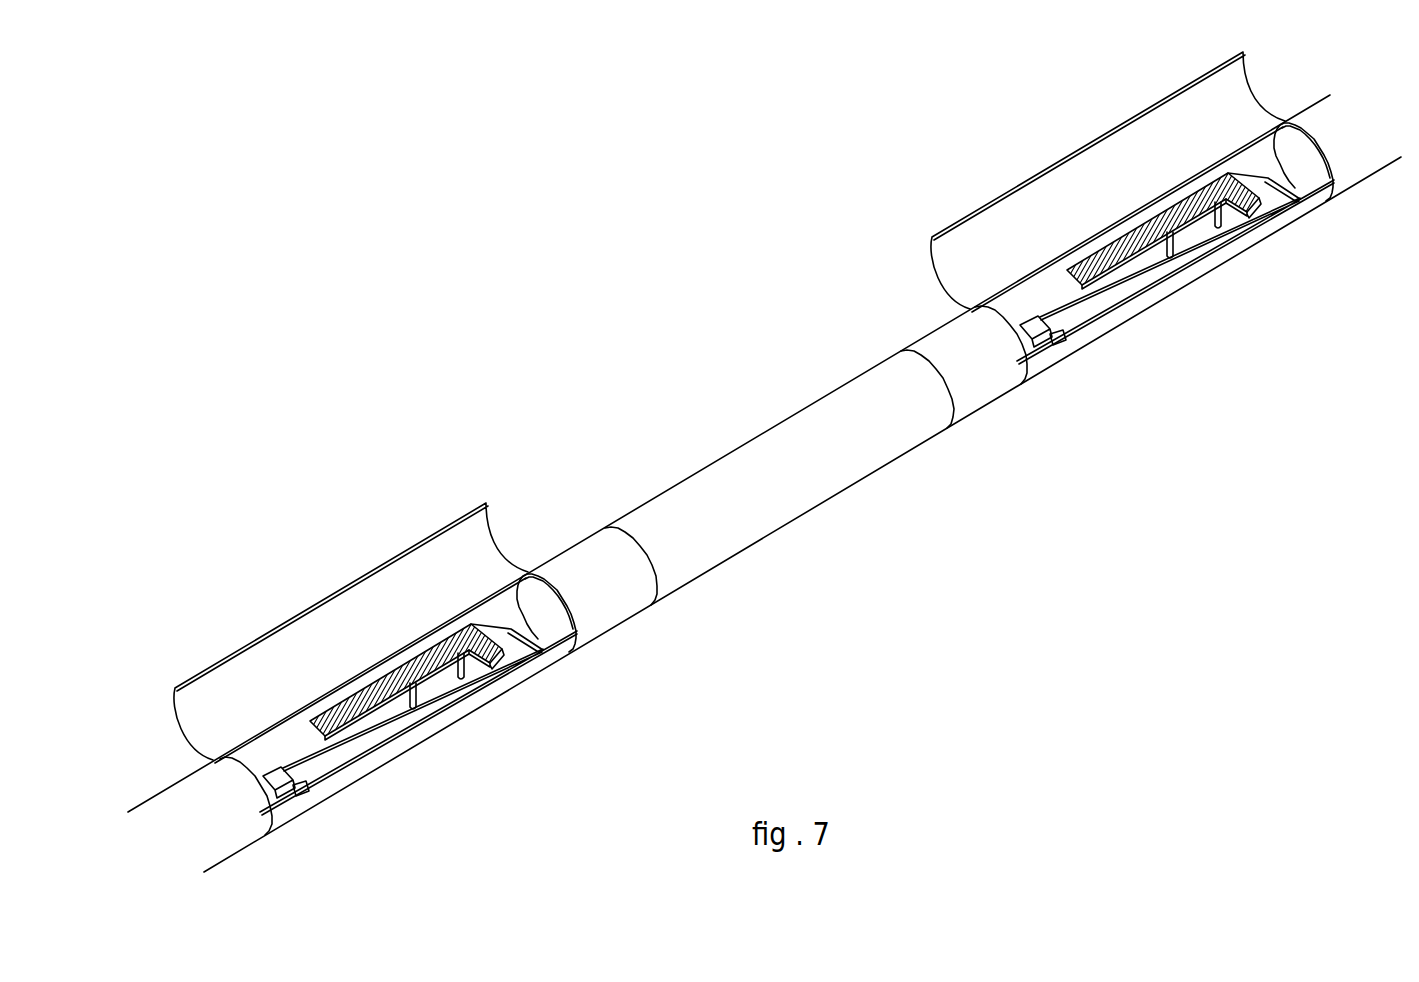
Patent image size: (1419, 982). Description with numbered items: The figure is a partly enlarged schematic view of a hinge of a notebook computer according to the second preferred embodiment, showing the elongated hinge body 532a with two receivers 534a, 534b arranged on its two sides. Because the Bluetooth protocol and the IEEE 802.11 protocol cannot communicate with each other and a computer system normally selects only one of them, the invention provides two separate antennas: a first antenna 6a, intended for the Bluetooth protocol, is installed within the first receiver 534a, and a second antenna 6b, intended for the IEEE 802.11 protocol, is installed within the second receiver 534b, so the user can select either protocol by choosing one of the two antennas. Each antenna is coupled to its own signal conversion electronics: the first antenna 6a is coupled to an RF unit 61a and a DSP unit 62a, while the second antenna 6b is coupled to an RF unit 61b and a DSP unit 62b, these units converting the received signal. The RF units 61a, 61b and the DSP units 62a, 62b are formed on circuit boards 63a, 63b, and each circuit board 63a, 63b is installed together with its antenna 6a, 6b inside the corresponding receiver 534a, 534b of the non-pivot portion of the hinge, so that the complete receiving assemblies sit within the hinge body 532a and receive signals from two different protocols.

The tubular shaft 532a is at (763, 458).
The receiver 534a is at (1034, 211).
The receiver 534b is at (277, 665).
The first antenna 6a is at (1142, 225).
The second antenna 6b is at (378, 680).
The RF unit 61a is at (1046, 321).
The RF unit 61b is at (287, 777).
The DSP unit 62a is at (1045, 345).
The DSP unit 62b is at (283, 793).
The circuit board 63a is at (1128, 282).
The circuit board 63b is at (365, 732).